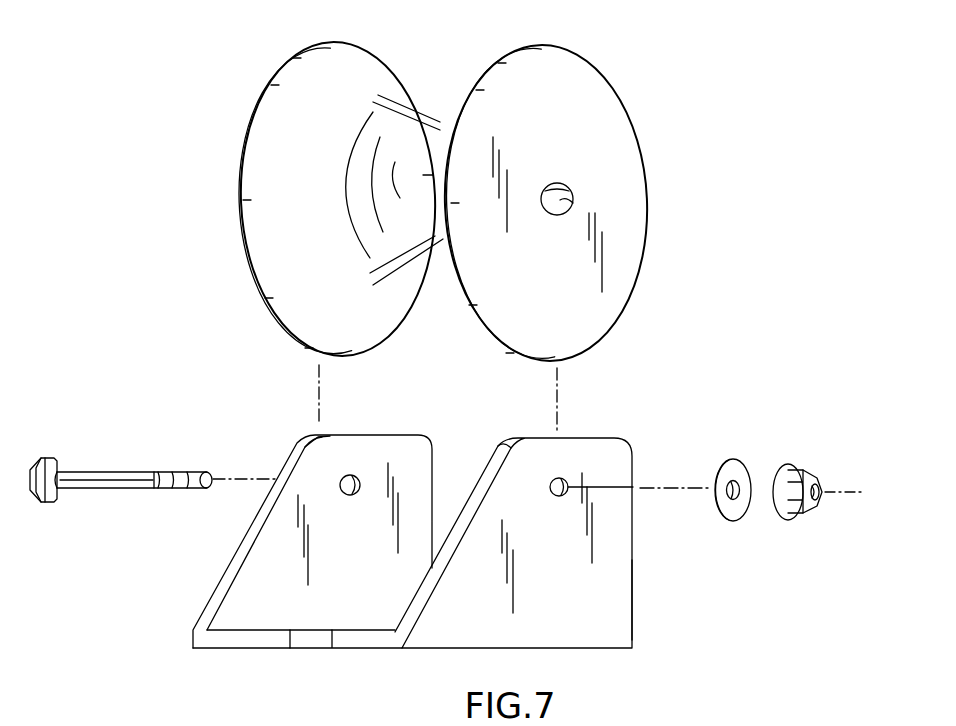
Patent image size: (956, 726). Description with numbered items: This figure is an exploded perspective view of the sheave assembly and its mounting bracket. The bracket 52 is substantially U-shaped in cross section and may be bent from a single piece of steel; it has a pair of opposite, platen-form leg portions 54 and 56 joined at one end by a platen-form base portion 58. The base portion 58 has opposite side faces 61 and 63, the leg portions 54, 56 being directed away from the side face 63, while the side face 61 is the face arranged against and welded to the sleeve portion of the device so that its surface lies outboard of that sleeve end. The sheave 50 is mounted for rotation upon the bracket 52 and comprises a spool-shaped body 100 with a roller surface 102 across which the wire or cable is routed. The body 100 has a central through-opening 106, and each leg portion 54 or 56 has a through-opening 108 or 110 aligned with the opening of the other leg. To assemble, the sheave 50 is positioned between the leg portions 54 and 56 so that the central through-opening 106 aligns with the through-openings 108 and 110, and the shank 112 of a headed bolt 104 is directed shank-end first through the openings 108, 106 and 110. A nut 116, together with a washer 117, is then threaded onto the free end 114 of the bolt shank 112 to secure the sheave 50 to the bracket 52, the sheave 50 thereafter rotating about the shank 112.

The sheave 50 is at (590, 102).
The bracket 52 is at (633, 545).
The leg portion 54 is at (215, 585).
The leg portion 56 is at (625, 581).
The base portion 58 is at (252, 647).
The side face 61 is at (357, 648).
The side face 63 is at (352, 630).
The spool-shaped body 100 is at (363, 95).
The roller surface 102 is at (442, 123).
The headed bolt 104 is at (95, 472).
The central through-opening 106 is at (573, 200).
The through-opening 108 is at (353, 477).
The through-opening 110 is at (565, 482).
The shank 112 is at (135, 472).
The free end 114 is at (188, 482).
The nut 116 is at (805, 468).
The washer 117 is at (730, 460).